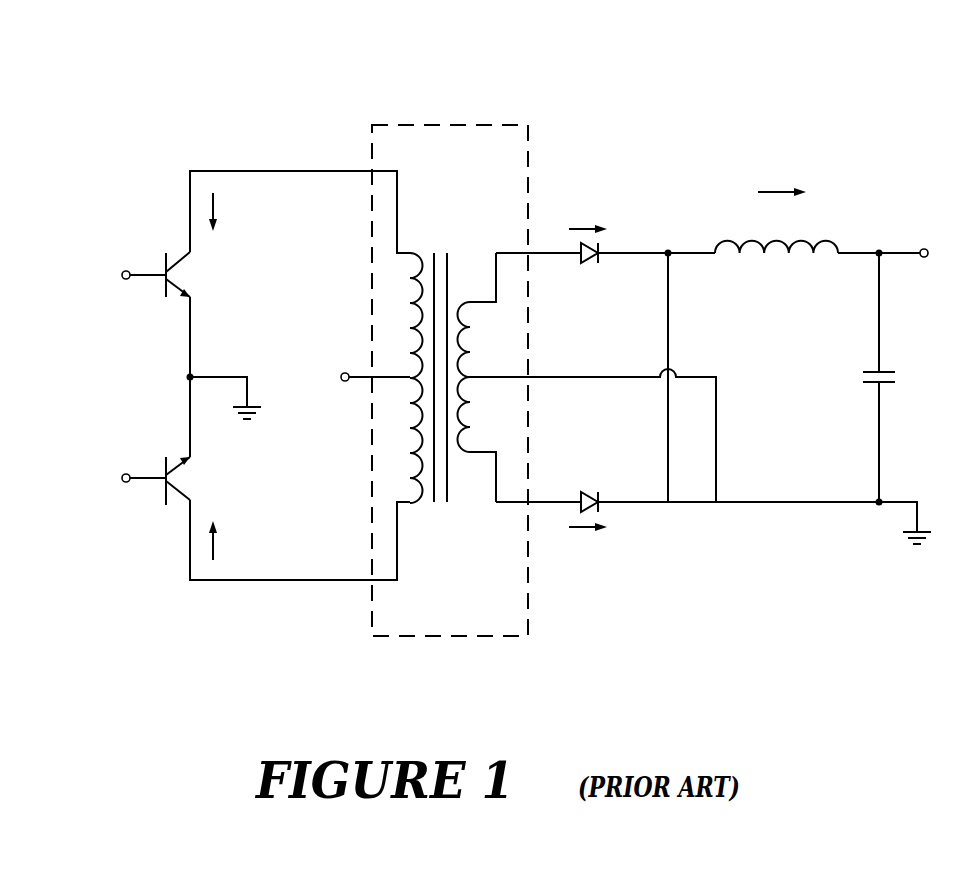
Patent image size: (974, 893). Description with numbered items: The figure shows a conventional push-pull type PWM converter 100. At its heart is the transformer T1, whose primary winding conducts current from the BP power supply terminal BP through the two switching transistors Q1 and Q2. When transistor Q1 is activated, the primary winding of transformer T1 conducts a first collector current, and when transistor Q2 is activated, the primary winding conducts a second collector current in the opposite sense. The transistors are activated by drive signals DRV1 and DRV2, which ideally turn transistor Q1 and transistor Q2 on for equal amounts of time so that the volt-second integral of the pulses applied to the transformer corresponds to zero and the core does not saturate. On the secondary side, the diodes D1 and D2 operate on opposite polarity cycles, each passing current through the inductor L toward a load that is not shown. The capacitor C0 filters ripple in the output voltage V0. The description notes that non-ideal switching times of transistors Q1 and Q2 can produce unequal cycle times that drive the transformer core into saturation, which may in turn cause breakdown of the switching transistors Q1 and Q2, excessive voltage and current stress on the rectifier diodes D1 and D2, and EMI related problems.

The prior art push-pull converter circuit 100 is at (841, 97).
The transistor Q1 is at (195, 274).
The transistor Q2 is at (195, 481).
The drive signal DRV1 is at (111, 273).
The drive signal DRV2 is at (111, 476).
The transformer T1 is at (450, 364).
The power supply terminal BP is at (358, 377).
The diode D1 is at (590, 267).
The diode D2 is at (590, 489).
The inductor L is at (776, 228).
The capacitor C0 is at (902, 377).
The output voltage V0 is at (943, 255).